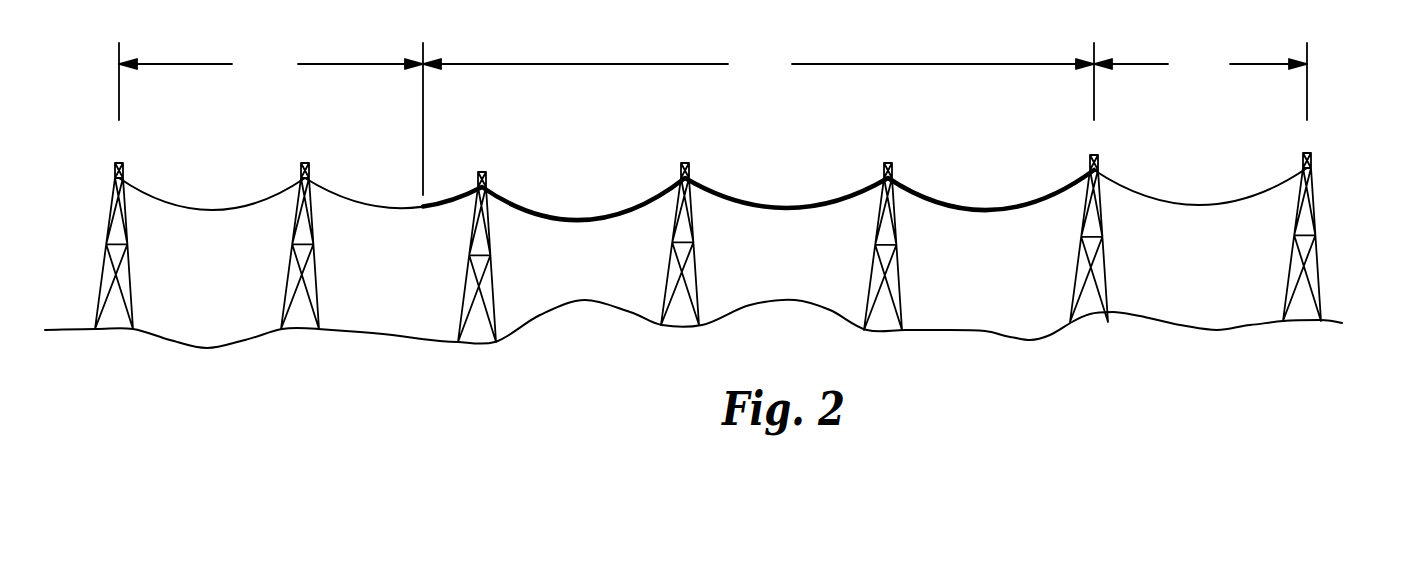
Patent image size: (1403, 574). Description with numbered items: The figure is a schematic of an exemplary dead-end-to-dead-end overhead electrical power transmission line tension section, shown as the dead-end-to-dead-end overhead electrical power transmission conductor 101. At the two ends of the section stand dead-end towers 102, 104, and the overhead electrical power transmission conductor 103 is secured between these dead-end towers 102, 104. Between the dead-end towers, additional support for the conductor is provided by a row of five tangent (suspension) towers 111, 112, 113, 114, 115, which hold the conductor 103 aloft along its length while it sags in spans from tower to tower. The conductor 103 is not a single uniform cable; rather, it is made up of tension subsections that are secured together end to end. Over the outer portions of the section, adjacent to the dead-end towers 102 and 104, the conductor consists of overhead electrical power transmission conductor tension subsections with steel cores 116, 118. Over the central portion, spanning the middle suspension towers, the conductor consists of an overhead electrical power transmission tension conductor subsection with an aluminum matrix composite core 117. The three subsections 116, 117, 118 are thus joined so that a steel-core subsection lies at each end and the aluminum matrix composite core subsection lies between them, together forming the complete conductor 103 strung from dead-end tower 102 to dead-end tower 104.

The dead-end-to-dead-end overhead electrical power transmission conductor 101 is at (78, 189).
The dead-end tower 102 is at (119, 163).
The overhead electrical power transmission conductor 103 is at (215, 209).
The dead-end tower 104 is at (1307, 153).
The tangent (suspension) tower 111 is at (305, 163).
The tangent (suspension) tower 112 is at (482, 172).
The tangent (suspension) tower 113 is at (685, 163).
The tangent (suspension) tower 114 is at (888, 163).
The tangent (suspension) tower 115 is at (1094, 155).
The overhead electrical power transmission conductor tension subsection with steel c 116 is at (271, 119).
The overhead electrical power transmission tension conductor subsection with aluminu 117 is at (758, 81).
The overhead electrical power transmission conductor tension subsection with steel c 118 is at (1200, 81).